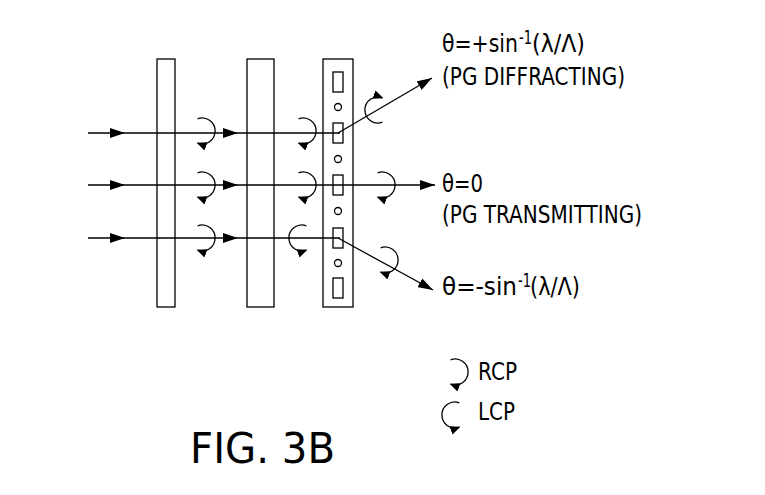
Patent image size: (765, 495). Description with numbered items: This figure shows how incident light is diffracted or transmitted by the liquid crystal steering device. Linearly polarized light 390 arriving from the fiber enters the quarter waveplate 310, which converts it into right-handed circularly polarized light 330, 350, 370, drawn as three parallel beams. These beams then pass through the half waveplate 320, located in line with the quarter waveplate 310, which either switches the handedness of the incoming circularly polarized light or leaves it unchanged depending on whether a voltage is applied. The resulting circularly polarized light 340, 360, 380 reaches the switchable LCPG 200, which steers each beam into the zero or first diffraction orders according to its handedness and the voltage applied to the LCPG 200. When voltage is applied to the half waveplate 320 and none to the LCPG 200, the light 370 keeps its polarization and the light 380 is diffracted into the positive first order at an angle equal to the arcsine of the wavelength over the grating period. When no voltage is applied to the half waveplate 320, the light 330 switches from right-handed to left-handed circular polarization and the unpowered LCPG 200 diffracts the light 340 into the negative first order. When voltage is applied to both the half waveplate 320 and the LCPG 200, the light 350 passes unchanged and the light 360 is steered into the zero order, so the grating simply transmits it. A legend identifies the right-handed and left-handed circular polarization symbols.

The LCPG 200 is at (345, 295).
The quarter waveplate 310 is at (165, 295).
The half waveplate 320 is at (264, 295).
The circularly polarized light 330 is at (218, 224).
The circularly polarized light 340 is at (294, 224).
The circularly polarized light 350 is at (218, 172).
The circularly polarized light 360 is at (297, 172).
The circularly polarized light 370 is at (205, 118).
The circularly polarized light 380 is at (300, 118).
The linearly polarized light 390 is at (90, 238).